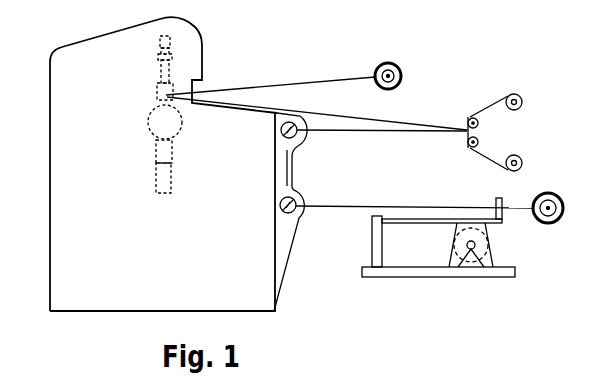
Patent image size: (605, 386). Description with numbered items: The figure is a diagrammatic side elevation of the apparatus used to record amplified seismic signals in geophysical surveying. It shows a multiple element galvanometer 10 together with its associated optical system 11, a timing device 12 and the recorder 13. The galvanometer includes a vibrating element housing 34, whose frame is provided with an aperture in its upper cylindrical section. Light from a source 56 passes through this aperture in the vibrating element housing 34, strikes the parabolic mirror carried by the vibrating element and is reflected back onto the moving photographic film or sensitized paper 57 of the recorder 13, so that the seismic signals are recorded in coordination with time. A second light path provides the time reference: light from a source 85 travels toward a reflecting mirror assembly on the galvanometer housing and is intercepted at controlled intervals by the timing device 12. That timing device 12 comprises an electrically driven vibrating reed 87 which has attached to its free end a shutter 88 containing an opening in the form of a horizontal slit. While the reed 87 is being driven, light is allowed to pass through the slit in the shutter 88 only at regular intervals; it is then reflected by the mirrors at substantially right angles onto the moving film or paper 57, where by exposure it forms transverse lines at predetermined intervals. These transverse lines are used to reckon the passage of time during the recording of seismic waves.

The multiple element galvanometer 10 is at (50, 139).
The vibrating element housing 34 is at (148, 124).
The optical system 11 is at (352, 100).
The light source 56 is at (380, 65).
The recorder 13 is at (530, 138).
The photographic film or sensitized paper 57 is at (476, 150).
The vibrating reed 87 is at (430, 223).
The shutter 88 is at (503, 200).
The timing device 12 is at (518, 248).
The light source 85 is at (558, 198).